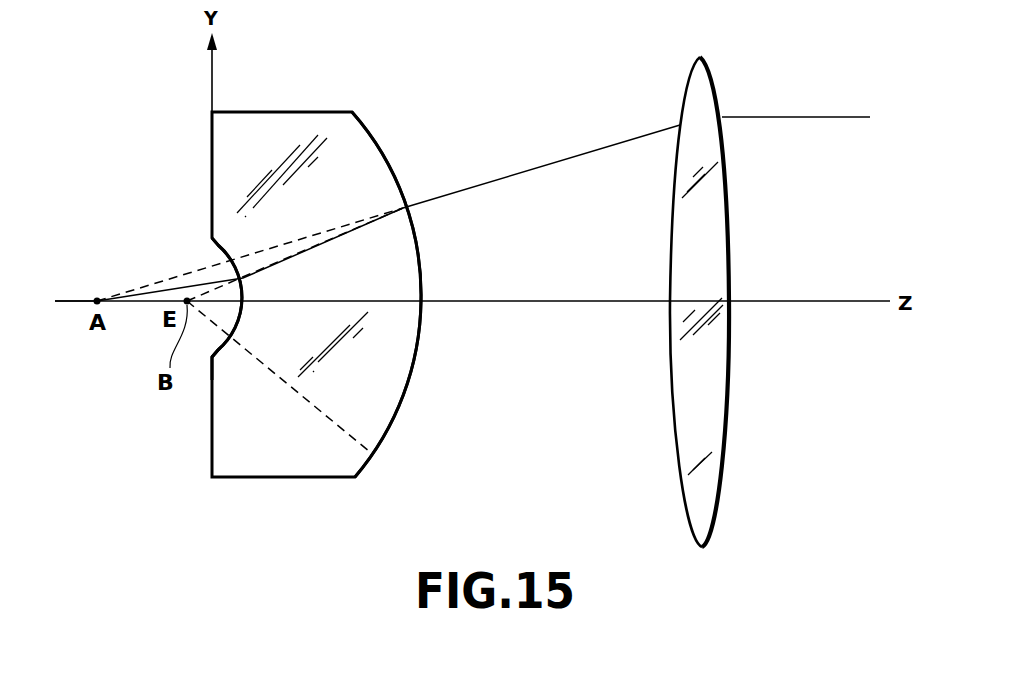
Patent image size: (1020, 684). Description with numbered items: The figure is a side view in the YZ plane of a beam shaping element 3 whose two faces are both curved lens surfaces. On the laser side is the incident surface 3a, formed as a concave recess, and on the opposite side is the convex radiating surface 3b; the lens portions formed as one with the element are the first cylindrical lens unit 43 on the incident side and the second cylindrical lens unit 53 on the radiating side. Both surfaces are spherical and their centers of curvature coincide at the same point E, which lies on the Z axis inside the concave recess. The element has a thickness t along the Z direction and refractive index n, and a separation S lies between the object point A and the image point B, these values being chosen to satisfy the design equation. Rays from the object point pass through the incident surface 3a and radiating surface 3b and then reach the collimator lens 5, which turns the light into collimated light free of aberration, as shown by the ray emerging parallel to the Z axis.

The beam shaping element 3 is at (285, 112).
The incident surface 3a is at (212, 214).
The radiating surface 3b is at (392, 165).
The second cylindrical lens unit 53 is at (393, 395).
The first cylindrical lens unit 43 is at (222, 348).
The collimator lens 5 is at (702, 82).